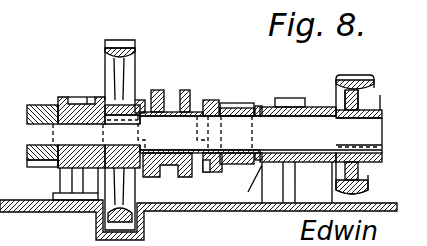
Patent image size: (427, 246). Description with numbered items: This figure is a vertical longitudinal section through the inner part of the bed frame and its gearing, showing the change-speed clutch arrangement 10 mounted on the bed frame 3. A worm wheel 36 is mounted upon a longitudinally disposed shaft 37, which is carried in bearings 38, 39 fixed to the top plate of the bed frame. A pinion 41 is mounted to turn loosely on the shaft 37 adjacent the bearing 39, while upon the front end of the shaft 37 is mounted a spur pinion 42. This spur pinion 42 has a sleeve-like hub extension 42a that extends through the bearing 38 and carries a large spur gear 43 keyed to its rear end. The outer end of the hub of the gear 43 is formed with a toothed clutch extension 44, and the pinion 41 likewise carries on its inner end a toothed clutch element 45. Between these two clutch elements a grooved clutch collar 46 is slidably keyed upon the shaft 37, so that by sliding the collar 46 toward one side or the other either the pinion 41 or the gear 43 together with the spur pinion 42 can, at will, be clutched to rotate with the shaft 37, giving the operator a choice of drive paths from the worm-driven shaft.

The base plate 3 is at (207, 224).
The assembly 10 is at (158, 3).
The worm wheel 36 is at (356, 86).
The longitudinally disposed shaft 37 is at (377, 138).
The bearing 38 is at (87, 104).
The bearing 39 is at (315, 107).
The pinion 41 is at (242, 102).
The spur pinion 42 is at (37, 106).
The sleeve-like hub extension 42a is at (68, 97).
The large spur gear 43 is at (130, 40).
The toothed clutch extension 44 is at (140, 100).
The toothed clutch element 45 is at (206, 100).
The grooved clutch collar 46 is at (158, 96).